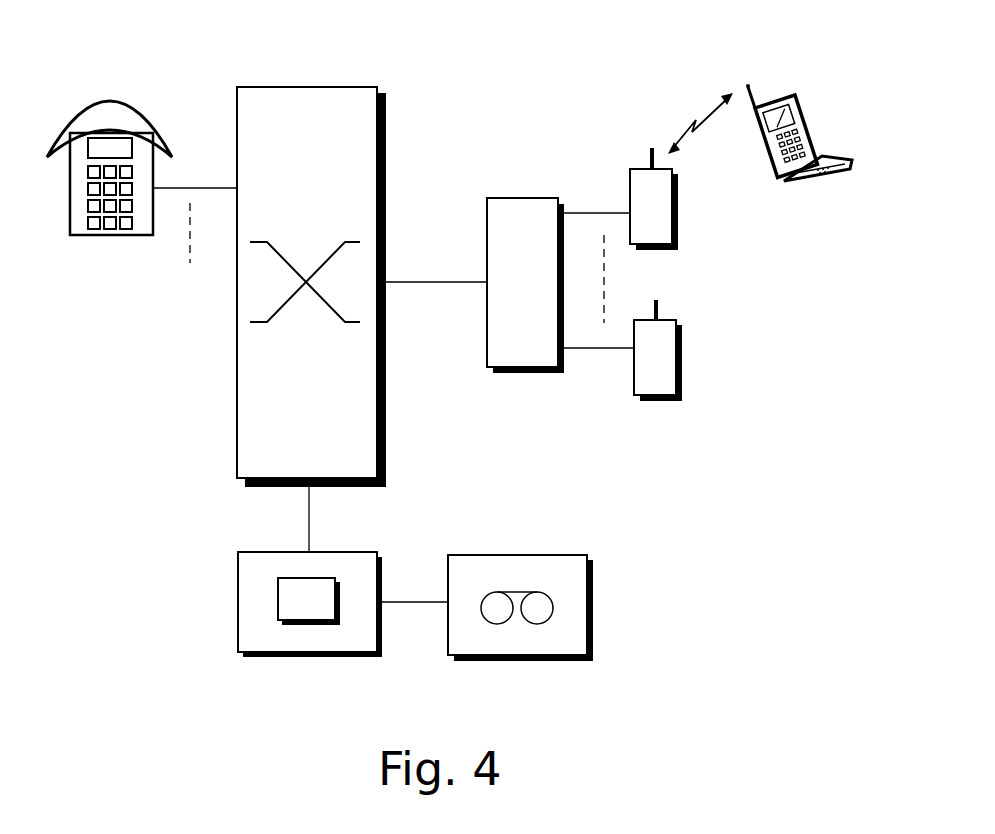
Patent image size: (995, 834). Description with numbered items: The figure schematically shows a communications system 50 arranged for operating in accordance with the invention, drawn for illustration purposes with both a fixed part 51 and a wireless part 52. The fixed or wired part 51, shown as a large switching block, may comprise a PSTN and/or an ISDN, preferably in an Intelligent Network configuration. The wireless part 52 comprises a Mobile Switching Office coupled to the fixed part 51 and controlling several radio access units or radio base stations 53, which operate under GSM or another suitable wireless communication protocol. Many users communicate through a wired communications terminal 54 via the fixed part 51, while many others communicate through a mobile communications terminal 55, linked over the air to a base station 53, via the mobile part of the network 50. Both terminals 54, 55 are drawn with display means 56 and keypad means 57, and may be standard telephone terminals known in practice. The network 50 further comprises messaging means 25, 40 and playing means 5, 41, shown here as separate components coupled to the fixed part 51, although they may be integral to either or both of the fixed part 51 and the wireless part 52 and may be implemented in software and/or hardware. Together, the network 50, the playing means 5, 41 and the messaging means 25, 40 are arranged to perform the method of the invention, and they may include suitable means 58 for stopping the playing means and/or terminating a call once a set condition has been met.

The communications system 50 is at (507, 73).
The fixed part 51 is at (290, 102).
The wireless part 52 is at (503, 213).
The radio base station 53 is at (633, 178).
The wired communications terminal 54 is at (97, 112).
The mobile communications terminal 55 is at (825, 183).
The display means 56 is at (74, 157).
The keypad means 57 is at (108, 228).
The means for stopping the playing means and/or terminating a call 58 is at (305, 608).
The messaging means 25 is at (326, 591).
The messaging means 40 is at (363, 563).
The playing means 5 is at (555, 572).
The playing means 41 is at (562, 563).